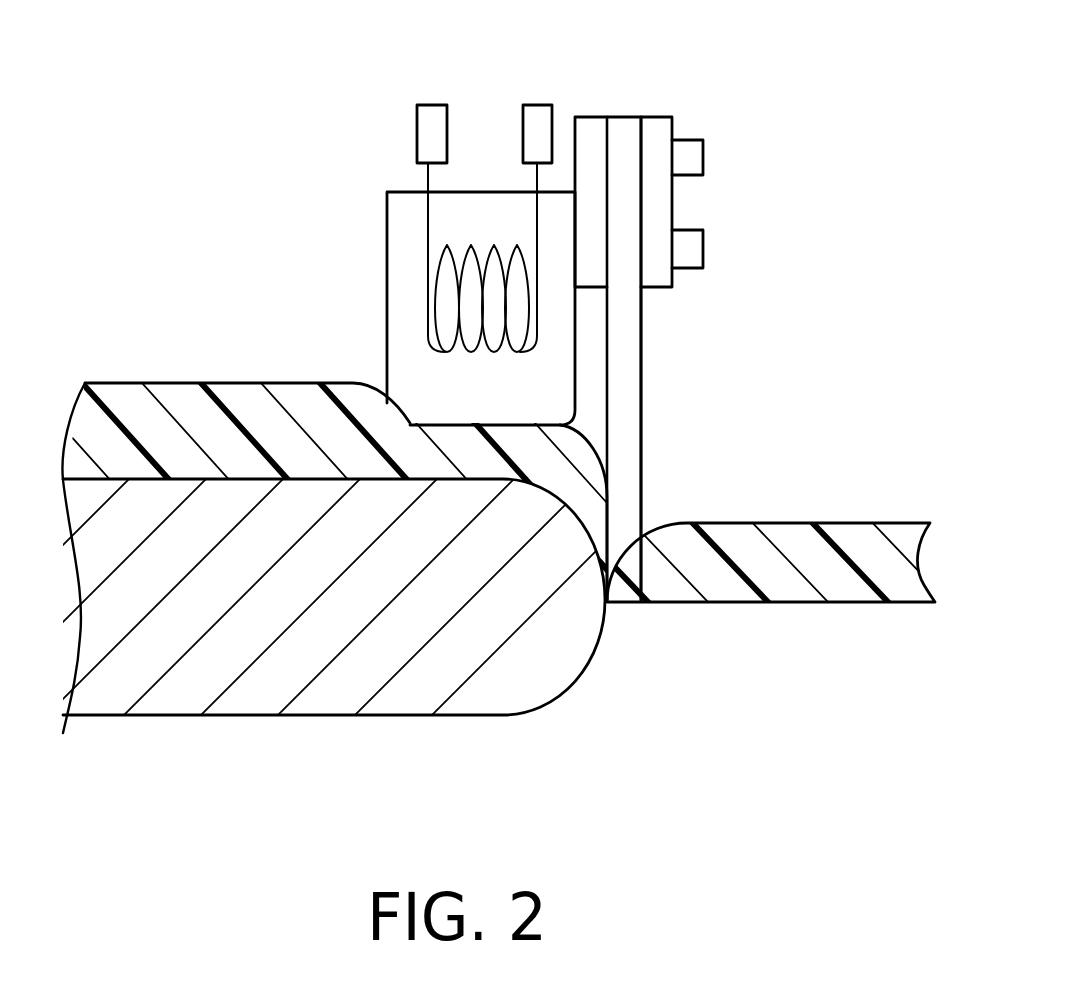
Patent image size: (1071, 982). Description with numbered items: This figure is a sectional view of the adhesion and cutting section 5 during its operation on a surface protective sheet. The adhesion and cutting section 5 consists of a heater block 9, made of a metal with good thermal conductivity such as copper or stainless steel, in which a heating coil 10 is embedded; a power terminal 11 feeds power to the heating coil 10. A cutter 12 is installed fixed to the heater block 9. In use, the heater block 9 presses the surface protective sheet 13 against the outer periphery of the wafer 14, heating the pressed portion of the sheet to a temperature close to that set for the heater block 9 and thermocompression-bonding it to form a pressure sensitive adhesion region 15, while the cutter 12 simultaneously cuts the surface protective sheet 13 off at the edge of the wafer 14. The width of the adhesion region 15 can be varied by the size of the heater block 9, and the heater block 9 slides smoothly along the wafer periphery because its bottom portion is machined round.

The adhesion and cutting section 5 is at (625, 99).
The heater block 9 is at (387, 313).
The heating coil 10 is at (428, 228).
The power terminal 11 is at (428, 105).
The cutter 12 is at (640, 360).
The surface protective sheet 13 is at (113, 383).
The wafer 14 is at (325, 695).
The adhesion region 15 is at (477, 457).